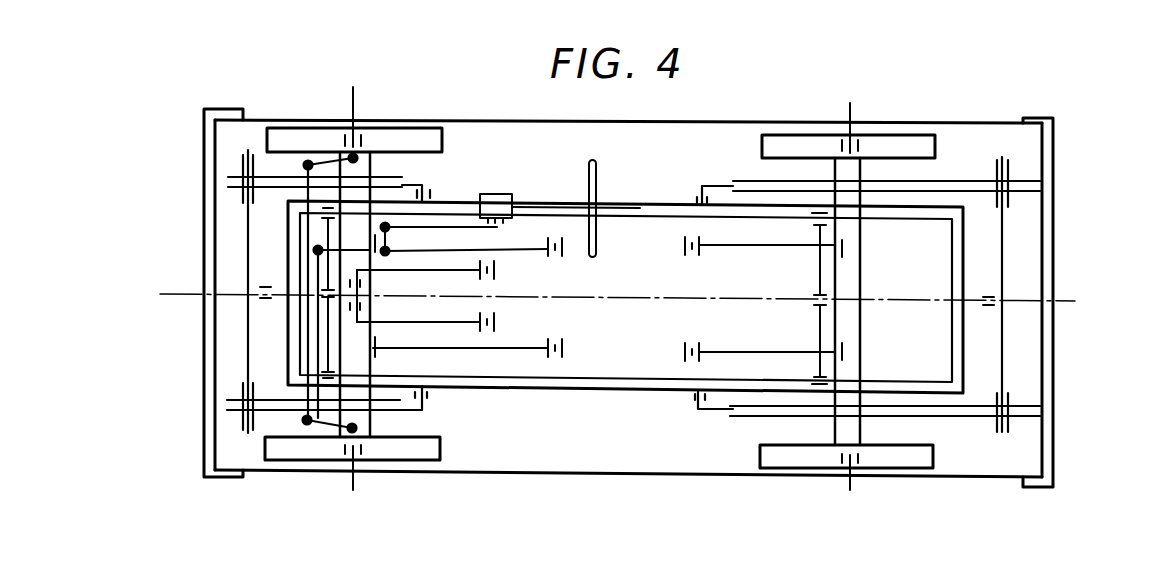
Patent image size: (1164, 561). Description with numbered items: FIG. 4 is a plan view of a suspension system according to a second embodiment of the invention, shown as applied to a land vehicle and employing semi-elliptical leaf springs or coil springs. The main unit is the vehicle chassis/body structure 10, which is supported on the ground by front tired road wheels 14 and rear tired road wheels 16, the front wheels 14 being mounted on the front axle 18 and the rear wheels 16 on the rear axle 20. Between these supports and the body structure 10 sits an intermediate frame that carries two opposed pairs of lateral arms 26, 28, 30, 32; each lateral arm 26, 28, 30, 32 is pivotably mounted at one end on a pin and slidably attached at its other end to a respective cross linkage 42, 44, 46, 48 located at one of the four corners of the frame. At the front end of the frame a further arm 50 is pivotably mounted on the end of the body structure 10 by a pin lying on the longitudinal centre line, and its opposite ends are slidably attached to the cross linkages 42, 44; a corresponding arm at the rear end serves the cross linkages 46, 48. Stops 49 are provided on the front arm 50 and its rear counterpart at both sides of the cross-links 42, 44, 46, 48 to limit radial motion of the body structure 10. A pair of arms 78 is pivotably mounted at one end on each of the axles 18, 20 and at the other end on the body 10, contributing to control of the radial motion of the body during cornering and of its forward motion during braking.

The vehicle chassis/body structure 10 is at (637, 205).
The front tired road wheels 14 is at (417, 138).
The rear tired road wheels 16 is at (898, 142).
The front axle 18 is at (368, 427).
The rear axle 20 is at (848, 428).
The lateral arm 26 is at (417, 178).
The lateral arm 28 is at (467, 271).
The lateral arm 30 is at (703, 185).
The lateral arm 32 is at (713, 410).
The cross linkage 42 is at (243, 191).
The cross linkage 44 is at (232, 408).
The cross linkage 46 is at (1020, 182).
The cross linkage 48 is at (1005, 397).
The stops 49 is at (208, 208).
The front arm 50 is at (247, 263).
The arms 78 is at (520, 348).